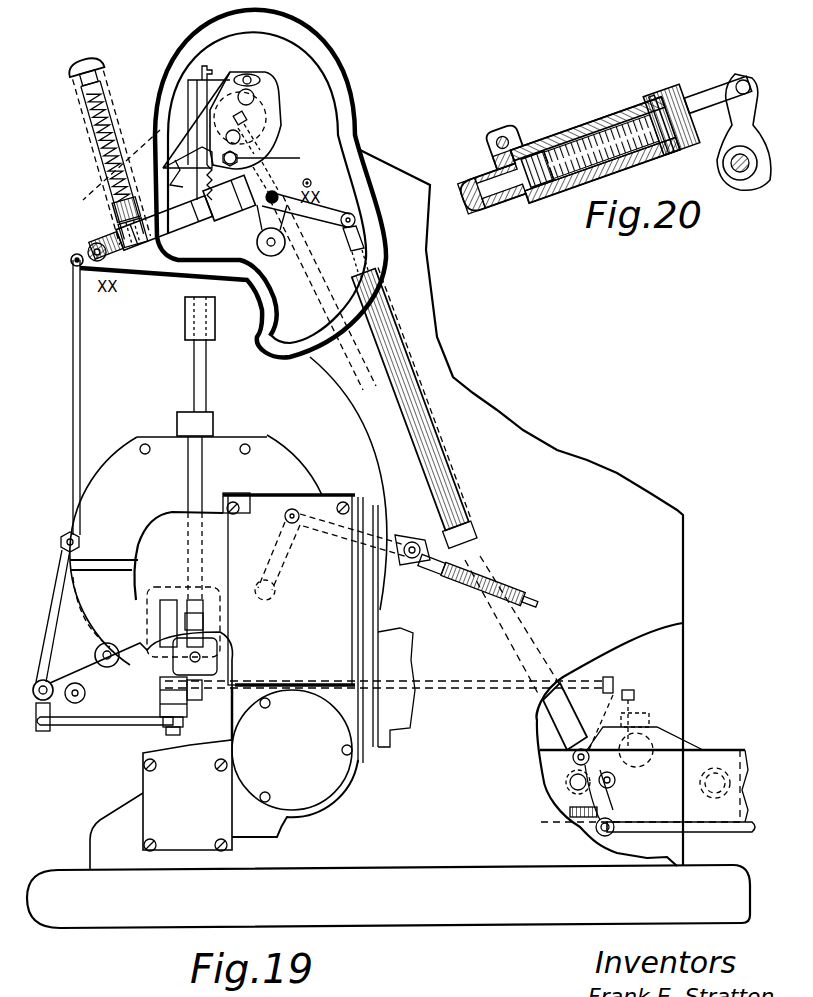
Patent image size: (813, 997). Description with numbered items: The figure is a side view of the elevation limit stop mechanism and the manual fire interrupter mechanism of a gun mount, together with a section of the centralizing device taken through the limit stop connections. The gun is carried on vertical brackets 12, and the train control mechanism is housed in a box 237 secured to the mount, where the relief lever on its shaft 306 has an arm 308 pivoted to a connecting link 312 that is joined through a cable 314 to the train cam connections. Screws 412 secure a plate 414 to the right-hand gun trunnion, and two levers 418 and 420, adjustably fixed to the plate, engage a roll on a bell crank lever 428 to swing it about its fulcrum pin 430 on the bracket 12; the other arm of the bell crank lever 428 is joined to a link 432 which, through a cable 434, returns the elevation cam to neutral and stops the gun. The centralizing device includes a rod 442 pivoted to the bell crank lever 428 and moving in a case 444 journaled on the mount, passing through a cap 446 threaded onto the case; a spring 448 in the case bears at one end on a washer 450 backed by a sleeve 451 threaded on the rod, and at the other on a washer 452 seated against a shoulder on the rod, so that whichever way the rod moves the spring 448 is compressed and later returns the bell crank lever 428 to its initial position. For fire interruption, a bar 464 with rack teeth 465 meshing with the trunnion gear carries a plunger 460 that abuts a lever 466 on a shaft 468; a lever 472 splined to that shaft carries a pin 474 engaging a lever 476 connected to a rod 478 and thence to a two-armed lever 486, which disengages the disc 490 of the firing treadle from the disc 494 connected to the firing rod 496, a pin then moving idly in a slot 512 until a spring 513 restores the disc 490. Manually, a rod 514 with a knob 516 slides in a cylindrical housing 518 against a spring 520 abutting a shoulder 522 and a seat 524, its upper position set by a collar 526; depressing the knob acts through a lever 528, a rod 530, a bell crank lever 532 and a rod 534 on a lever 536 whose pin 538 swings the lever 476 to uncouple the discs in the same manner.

In FIG. 19, the vertical bracket 12 is at (388, 539).
In FIG. 19, the box 237 is at (328, 493).
In FIG. 19, the shaft 306 is at (268, 596).
In FIG. 19, the arm 308 is at (275, 540).
In FIG. 19, the connecting link 312 is at (338, 545).
In FIG. 19, the cable 314 is at (465, 587).
In FIG. 19, the screw 412 is at (250, 96).
In FIG. 19, the plate 414 is at (255, 117).
In FIG. 19, the lever 418 is at (276, 137).
In FIG. 19, the lever 420 is at (177, 162).
In FIG. 19, the bell crank lever 428 is at (347, 216).
In FIG. 20, the bell crank lever 428 is at (731, 123).
In FIG. 19, the fulcrum pin 430 is at (275, 254).
In FIG. 20, the fulcrum pin 430 is at (743, 181).
In FIG. 19, the link 432 is at (362, 250).
In FIG. 19, the cable 434 is at (425, 463).
In FIG. 19, the rod 442 is at (268, 200).
In FIG. 20, the rod 442 is at (699, 97).
In FIG. 19, the case 444 is at (153, 262).
In FIG. 20, the case 444 is at (577, 132).
In FIG. 19, the cap 446 is at (213, 308).
In FIG. 20, the cap 446 is at (657, 88).
In FIG. 20, the spring 448 is at (573, 178).
In FIG. 20, the washer 450 is at (542, 150).
In FIG. 20, the sleeve 451 is at (530, 150).
In FIG. 20, the washer 452 is at (667, 143).
In FIG. 19, the plunger 460 is at (213, 657).
In FIG. 19, the bar 464 is at (203, 372).
In FIG. 19, the rack teeth 465 is at (210, 70).
In FIG. 19, the lever 466 is at (187, 594).
In FIG. 19, the shaft 468 is at (175, 587).
In FIG. 19, the lever 472 is at (160, 687).
In FIG. 19, the pin 474 is at (217, 683).
In FIG. 19, the lever 476 is at (160, 698).
In FIG. 19, the rod 478 is at (490, 688).
In FIG. 19, the two-armed lever 486 is at (583, 787).
In FIG. 19, the disc 490 is at (612, 790).
In FIG. 19, the disc 494 is at (625, 672).
In FIG. 19, the firing rod 496 is at (560, 727).
In FIG. 19, the slot 512 is at (586, 748).
In FIG. 19, the spring 513 is at (567, 820).
In FIG. 19, the rod 514 is at (177, 160).
In FIG. 19, the knob 516 is at (89, 62).
In FIG. 19, the cylindrical housing 518 is at (145, 66).
In FIG. 19, the spring 520 is at (90, 144).
In FIG. 19, the shoulder 522 is at (90, 108).
In FIG. 19, the seat 524 is at (100, 187).
In FIG. 19, the collar 526 is at (103, 212).
In FIG. 19, the lever 528 is at (117, 255).
In FIG. 19, the rod 530 is at (82, 388).
In FIG. 19, the bell crank lever 532 is at (40, 710).
In FIG. 19, the rod 534 is at (106, 728).
In FIG. 19, the lever 536 is at (178, 710).
In FIG. 19, the pin 538 is at (188, 703).